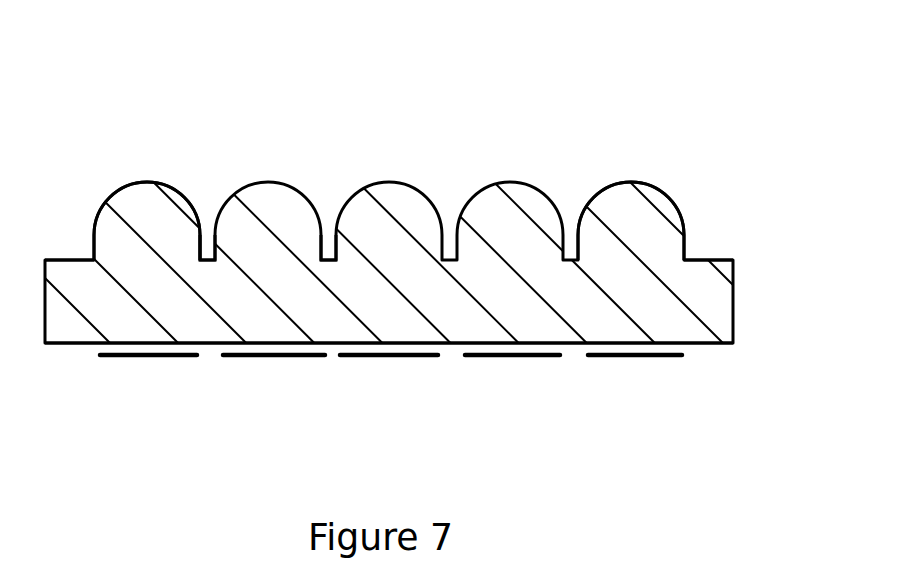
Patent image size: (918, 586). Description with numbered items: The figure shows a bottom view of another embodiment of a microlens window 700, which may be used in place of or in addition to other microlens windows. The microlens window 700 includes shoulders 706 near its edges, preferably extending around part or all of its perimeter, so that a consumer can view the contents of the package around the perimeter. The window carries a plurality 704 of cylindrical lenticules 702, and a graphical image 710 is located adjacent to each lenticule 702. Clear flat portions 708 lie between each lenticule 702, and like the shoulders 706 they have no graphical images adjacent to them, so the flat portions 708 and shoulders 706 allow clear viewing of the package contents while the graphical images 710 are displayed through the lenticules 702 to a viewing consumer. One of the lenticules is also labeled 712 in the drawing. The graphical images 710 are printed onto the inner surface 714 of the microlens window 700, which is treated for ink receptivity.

The microlens window 700 is at (568, 124).
The cylindrical lenticule 702 is at (140, 182).
The plurality of cylindrical lenticules 704 is at (227, 142).
The shoulder 706 is at (50, 259).
The clear flat portion 708 is at (330, 259).
The graphical image 710 is at (637, 408).
The rounded protrusion 712 is at (635, 163).
The inner surface 714 is at (731, 356).